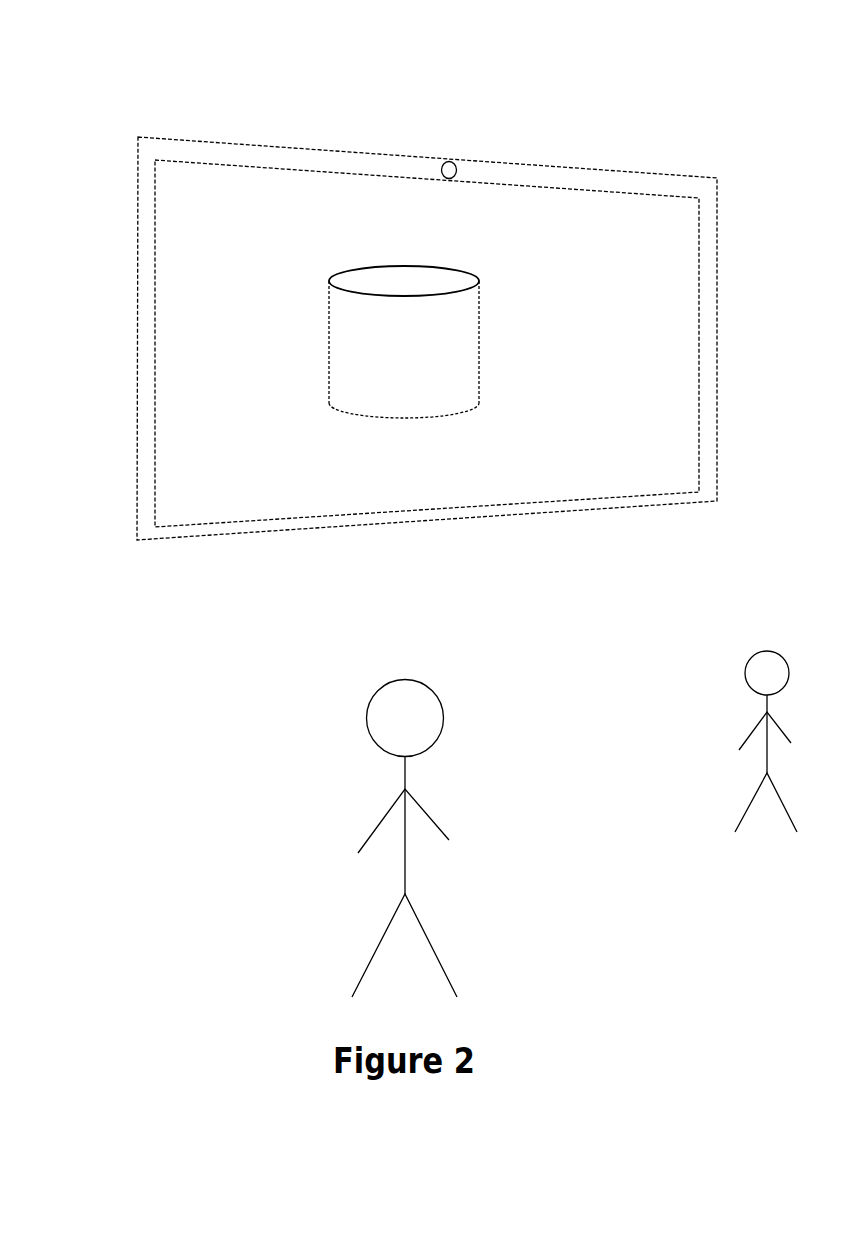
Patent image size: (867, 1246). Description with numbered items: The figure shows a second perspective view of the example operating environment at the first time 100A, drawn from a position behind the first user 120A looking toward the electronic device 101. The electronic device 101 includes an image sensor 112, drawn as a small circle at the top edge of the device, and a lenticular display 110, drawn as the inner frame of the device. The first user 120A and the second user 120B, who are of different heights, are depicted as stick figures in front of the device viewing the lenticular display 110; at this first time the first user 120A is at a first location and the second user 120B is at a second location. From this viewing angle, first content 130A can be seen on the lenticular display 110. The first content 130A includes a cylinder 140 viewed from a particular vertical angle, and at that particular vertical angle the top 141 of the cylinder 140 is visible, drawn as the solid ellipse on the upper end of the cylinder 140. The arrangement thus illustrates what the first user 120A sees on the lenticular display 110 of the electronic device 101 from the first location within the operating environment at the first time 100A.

The example operating environment at a first time 100A is at (168, 76).
The electronic device 101 is at (137, 317).
The lenticular display 110 is at (155, 237).
The image sensor 112 is at (453, 161).
The first content 130A is at (258, 240).
The cylinder 140 is at (328, 348).
The top of the cylinder 141 is at (420, 272).
The first user 120A is at (387, 815).
The second user 120B is at (758, 726).